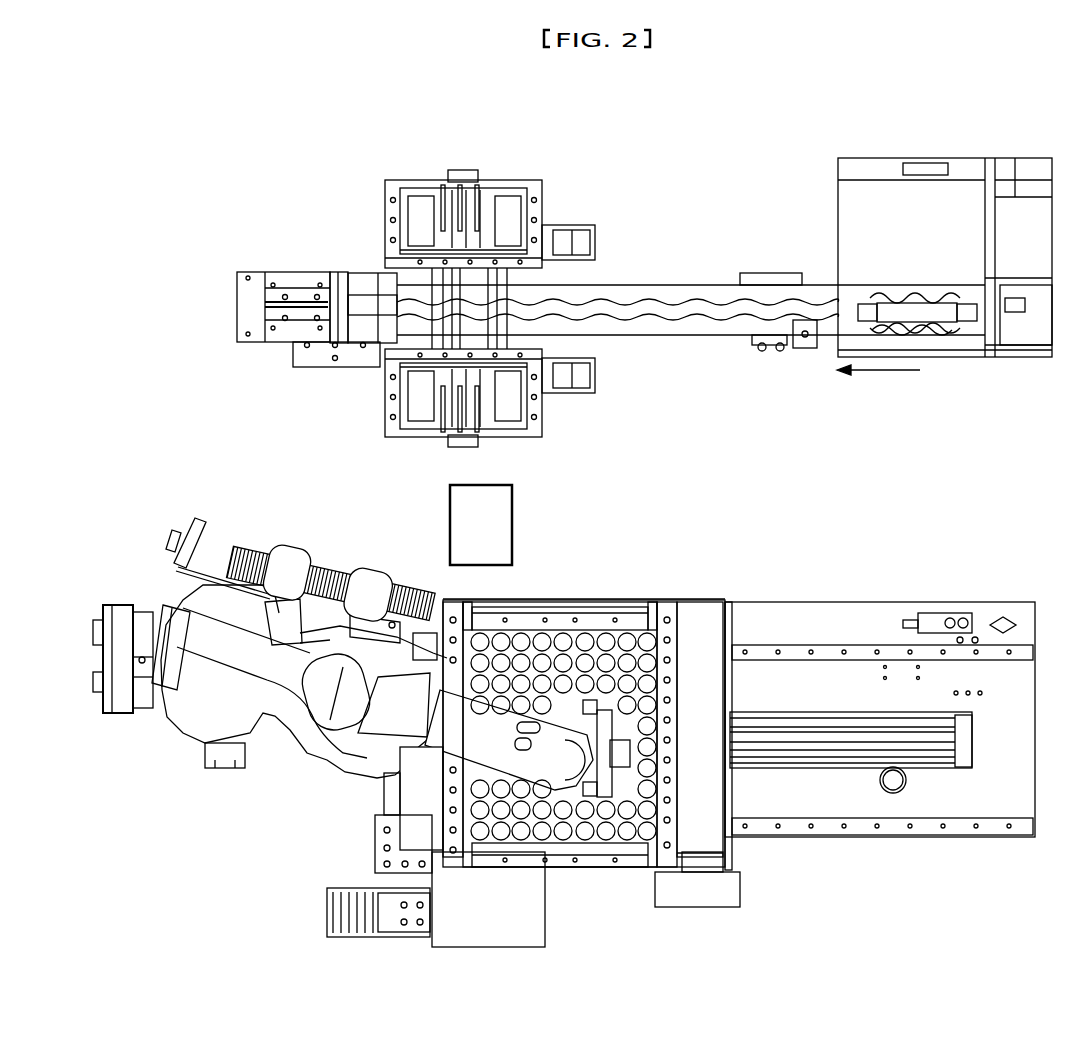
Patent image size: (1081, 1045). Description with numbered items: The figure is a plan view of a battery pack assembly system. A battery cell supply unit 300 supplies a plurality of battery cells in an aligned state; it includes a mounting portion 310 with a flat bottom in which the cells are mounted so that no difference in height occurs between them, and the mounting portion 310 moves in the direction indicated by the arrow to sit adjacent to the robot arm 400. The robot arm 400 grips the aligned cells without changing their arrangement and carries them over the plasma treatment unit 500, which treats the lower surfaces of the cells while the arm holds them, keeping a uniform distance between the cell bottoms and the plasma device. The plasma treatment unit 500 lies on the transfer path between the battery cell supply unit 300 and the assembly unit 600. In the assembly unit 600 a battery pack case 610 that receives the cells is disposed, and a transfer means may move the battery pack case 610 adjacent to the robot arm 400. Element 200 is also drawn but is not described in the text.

The tray 200 is at (598, 857).
The battery cell supply unit 300 is at (661, 256).
The mounting portion 310 is at (946, 338).
The robot arm 400 is at (239, 498).
The plasma treatment unit 500 is at (513, 510).
The assembly unit 600 is at (586, 580).
The battery pack case 610 is at (634, 618).